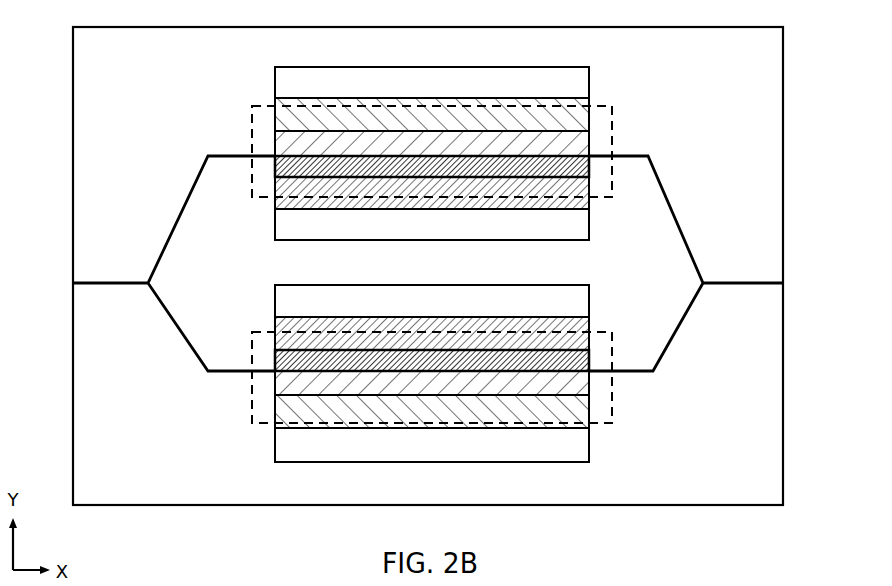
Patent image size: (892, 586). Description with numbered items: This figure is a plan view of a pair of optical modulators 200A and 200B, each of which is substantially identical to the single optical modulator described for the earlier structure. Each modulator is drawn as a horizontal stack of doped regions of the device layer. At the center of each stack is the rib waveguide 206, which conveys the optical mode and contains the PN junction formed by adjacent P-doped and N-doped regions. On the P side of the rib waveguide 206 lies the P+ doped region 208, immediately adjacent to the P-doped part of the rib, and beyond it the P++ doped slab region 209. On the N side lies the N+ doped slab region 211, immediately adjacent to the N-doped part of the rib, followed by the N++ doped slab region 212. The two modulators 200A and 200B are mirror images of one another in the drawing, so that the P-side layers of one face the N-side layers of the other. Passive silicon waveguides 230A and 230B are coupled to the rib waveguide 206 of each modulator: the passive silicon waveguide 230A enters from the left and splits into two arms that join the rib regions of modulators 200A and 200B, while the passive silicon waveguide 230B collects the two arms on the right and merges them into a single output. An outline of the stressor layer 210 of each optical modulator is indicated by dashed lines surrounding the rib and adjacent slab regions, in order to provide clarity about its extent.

The optical modulator 200A is at (263, 97).
The optical modulator 200B is at (263, 455).
The rib waveguide 206 is at (418, 163).
The P+ doped region 208 is at (418, 126).
The slab region 209 is at (418, 94).
The stressor layer 210 is at (612, 132).
The slab region 211 is at (418, 204).
The slab region 212 is at (418, 236).
The passive silicon waveguide 230A is at (115, 283).
The passive silicon waveguide 230B is at (755, 283).